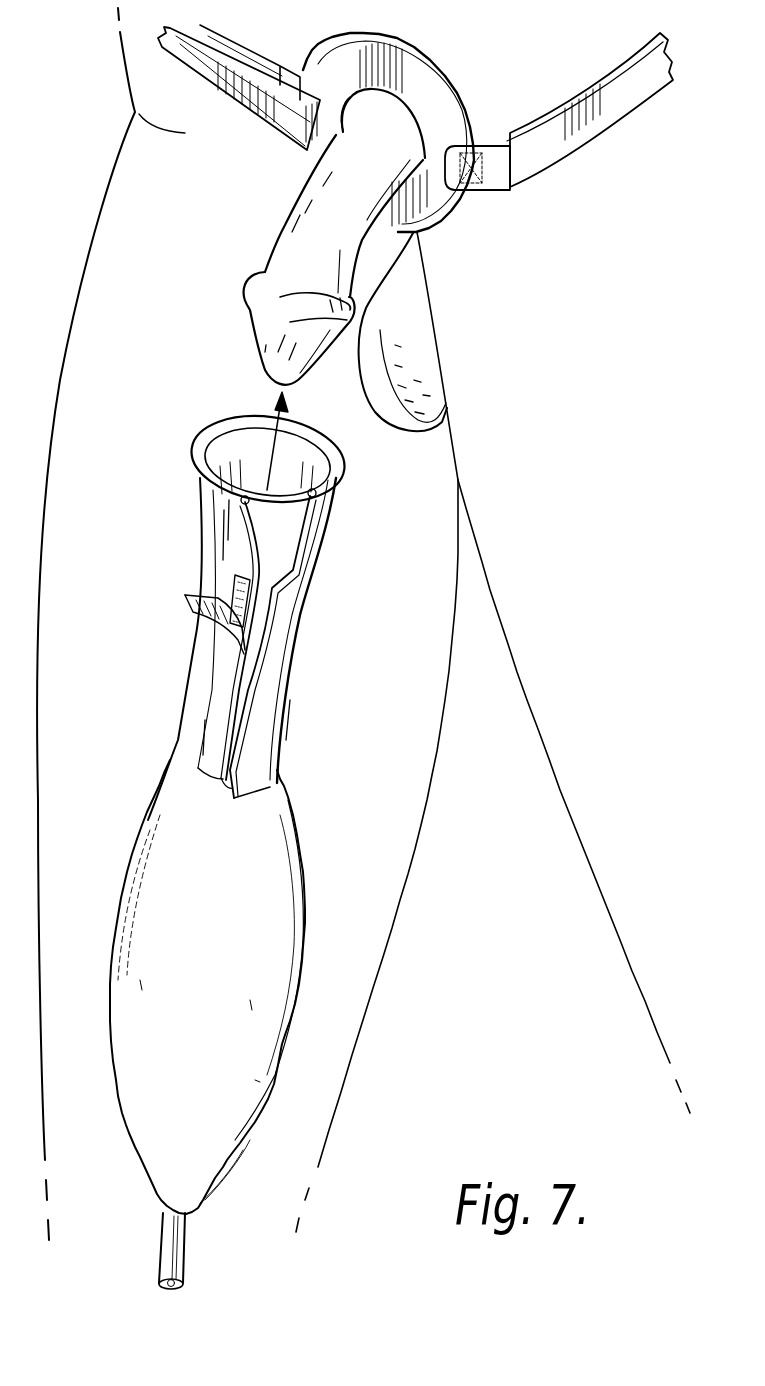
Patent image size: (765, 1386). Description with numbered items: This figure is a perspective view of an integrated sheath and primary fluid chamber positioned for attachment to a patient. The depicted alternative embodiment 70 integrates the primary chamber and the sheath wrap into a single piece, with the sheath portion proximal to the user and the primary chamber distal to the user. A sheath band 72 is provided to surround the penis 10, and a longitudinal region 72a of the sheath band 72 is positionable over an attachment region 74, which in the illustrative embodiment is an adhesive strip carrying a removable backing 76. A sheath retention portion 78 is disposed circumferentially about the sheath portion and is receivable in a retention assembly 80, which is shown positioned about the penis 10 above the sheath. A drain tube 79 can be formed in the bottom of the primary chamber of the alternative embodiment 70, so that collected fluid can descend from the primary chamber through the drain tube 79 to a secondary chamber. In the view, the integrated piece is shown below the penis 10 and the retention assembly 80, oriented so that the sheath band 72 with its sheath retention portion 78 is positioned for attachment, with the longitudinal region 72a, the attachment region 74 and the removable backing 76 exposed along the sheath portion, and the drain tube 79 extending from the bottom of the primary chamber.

The penis 10 is at (290, 204).
The alternative embodiment 70 is at (218, 972).
The sheath band 72 is at (312, 600).
The longitudinal region 72a is at (263, 710).
The attachment region 74 is at (233, 593).
The removable backing 76 is at (198, 607).
The sheath retention portion 78 is at (343, 467).
The drain tube 79 is at (185, 1250).
The retention assembly 80 is at (462, 72).